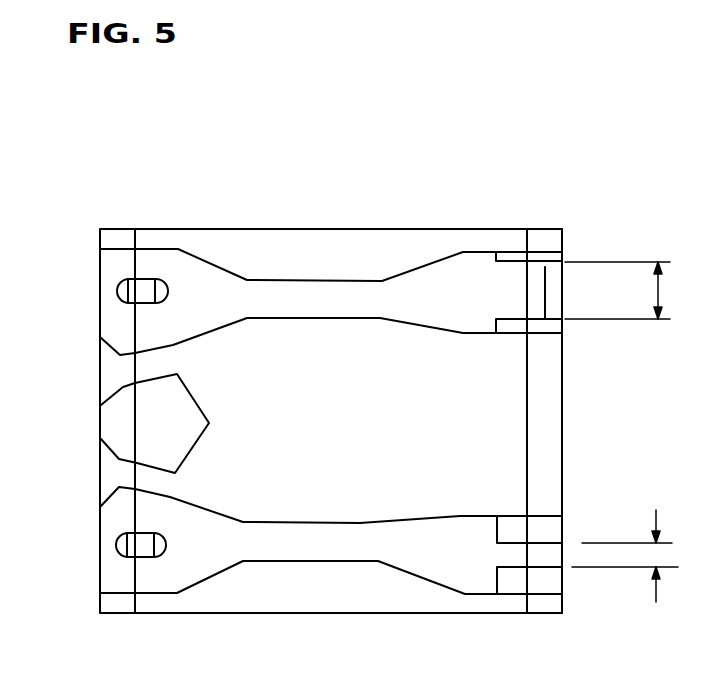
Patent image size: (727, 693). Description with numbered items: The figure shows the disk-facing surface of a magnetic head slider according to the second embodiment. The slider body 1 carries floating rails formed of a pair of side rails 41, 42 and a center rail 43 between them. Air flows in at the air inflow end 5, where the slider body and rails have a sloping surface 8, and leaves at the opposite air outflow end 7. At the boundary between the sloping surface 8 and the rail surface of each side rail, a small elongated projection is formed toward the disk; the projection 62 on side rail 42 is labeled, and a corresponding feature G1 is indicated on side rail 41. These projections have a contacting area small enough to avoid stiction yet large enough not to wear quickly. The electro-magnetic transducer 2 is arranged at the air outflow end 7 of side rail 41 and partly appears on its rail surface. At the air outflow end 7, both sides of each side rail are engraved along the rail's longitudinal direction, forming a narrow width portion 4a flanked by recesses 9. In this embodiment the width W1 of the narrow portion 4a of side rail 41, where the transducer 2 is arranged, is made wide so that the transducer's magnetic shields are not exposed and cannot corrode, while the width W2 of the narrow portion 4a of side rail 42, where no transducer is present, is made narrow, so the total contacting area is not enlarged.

The slider body 1 is at (371, 238).
The electro-magnetic transducer 2 is at (550, 298).
The narrow width portion 4a is at (555, 272).
The air inflow end 5 is at (107, 357).
The air outflow end 7 is at (563, 425).
The sloping surface 8 is at (105, 528).
The recess 9 is at (548, 325).
The side rail 41 is at (210, 280).
The side rail 42 is at (220, 562).
The center rail 43 is at (105, 428).
The projection 62 is at (143, 555).
The upper positioning hole G1 is at (153, 278).
The width of narrow portion of floating rail 41 W1 is at (634, 290).
The width of narrow portion of floating rail 42 W2 is at (625, 544).